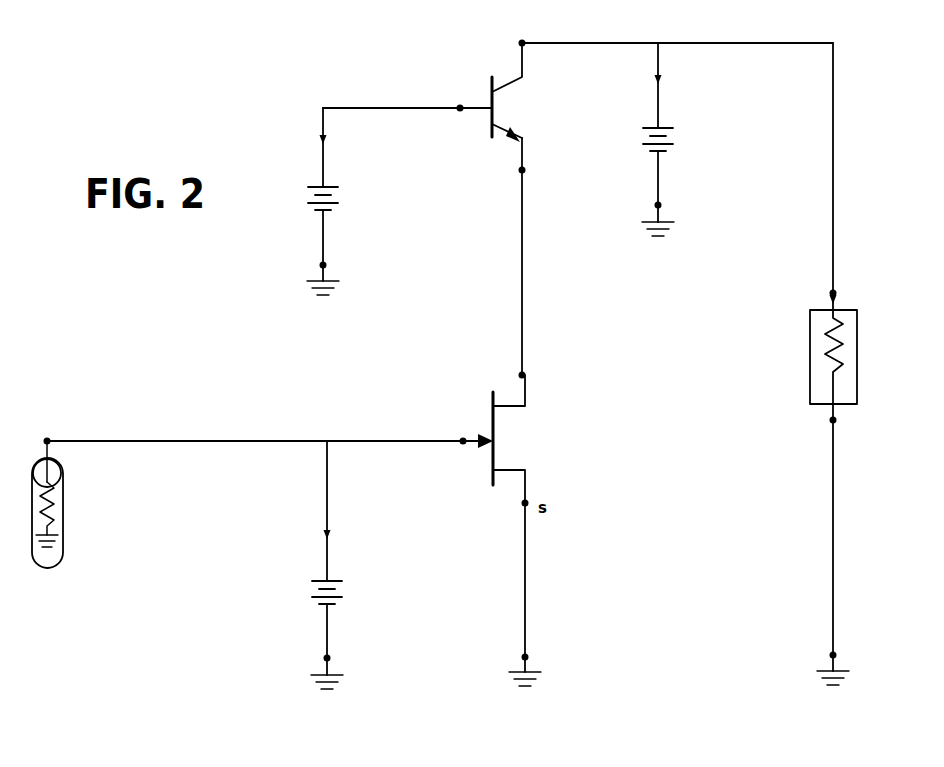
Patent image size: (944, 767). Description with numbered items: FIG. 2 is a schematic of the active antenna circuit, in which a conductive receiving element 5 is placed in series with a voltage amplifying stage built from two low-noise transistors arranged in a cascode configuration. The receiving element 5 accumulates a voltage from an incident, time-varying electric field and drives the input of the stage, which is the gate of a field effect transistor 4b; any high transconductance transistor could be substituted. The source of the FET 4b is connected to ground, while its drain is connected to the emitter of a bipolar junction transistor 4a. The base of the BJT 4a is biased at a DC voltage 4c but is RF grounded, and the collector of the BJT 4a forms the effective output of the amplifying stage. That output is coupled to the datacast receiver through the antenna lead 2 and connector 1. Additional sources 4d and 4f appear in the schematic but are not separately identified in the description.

The connector 1 is at (805, 320).
The antenna lead 2 is at (825, 143).
The bipolar junction transistor 4a is at (490, 78).
The field effect transistor 4b is at (490, 470).
The DC bias voltage 4c is at (338, 221).
The gate bias battery 4d is at (352, 587).
The power supply battery 4f is at (672, 161).
The conductive receiving element 5 is at (70, 522).